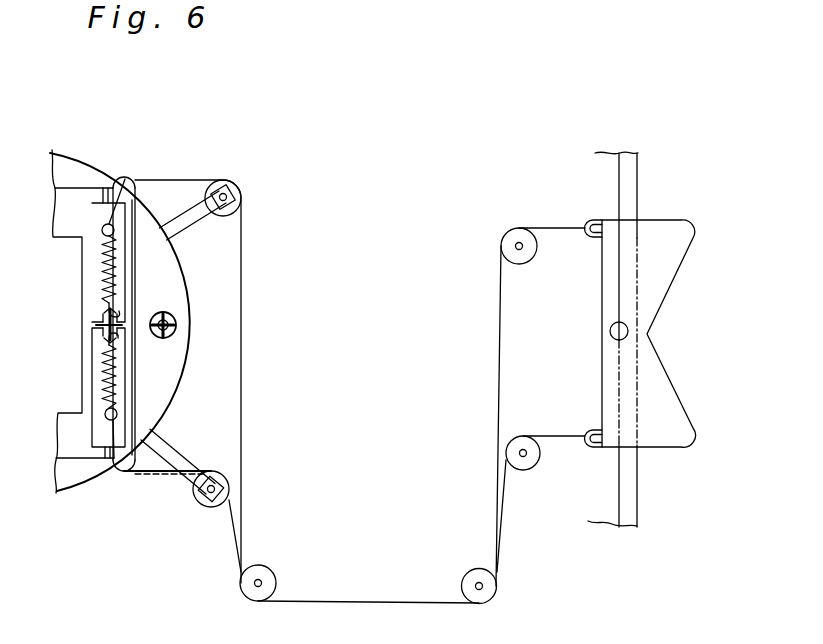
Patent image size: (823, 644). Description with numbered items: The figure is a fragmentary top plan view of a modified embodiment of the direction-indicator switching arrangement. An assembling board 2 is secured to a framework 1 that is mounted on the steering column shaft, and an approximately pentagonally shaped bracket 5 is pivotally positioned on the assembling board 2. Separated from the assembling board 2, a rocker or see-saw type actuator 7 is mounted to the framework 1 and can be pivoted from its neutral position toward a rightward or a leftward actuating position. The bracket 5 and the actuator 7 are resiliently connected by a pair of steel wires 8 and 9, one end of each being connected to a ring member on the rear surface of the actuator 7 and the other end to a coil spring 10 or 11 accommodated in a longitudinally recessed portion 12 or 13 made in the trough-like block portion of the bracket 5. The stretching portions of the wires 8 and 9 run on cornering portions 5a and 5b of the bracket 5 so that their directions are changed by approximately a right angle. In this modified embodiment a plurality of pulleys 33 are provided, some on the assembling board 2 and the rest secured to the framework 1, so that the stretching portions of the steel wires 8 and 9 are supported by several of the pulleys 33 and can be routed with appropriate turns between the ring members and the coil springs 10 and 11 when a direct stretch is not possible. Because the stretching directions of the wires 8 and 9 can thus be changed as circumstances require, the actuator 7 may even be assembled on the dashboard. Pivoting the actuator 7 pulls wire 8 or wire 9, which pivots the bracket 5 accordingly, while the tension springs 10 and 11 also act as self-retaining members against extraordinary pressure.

The framework 1 is at (640, 183).
The assembling board 2 is at (190, 316).
The bracket 5 is at (70, 172).
The cornering portion 5a is at (128, 178).
The cornering portion 5b is at (118, 466).
The actuator 7 is at (660, 318).
The steel wire 8 is at (242, 353).
The steel wire 9 is at (152, 472).
The coil spring 10 is at (118, 283).
The coil spring 11 is at (118, 360).
The longitudinally recessed portion 12 is at (118, 250).
The longitudinally recessed portion 13 is at (118, 390).
The pulleys 33 is at (221, 215).